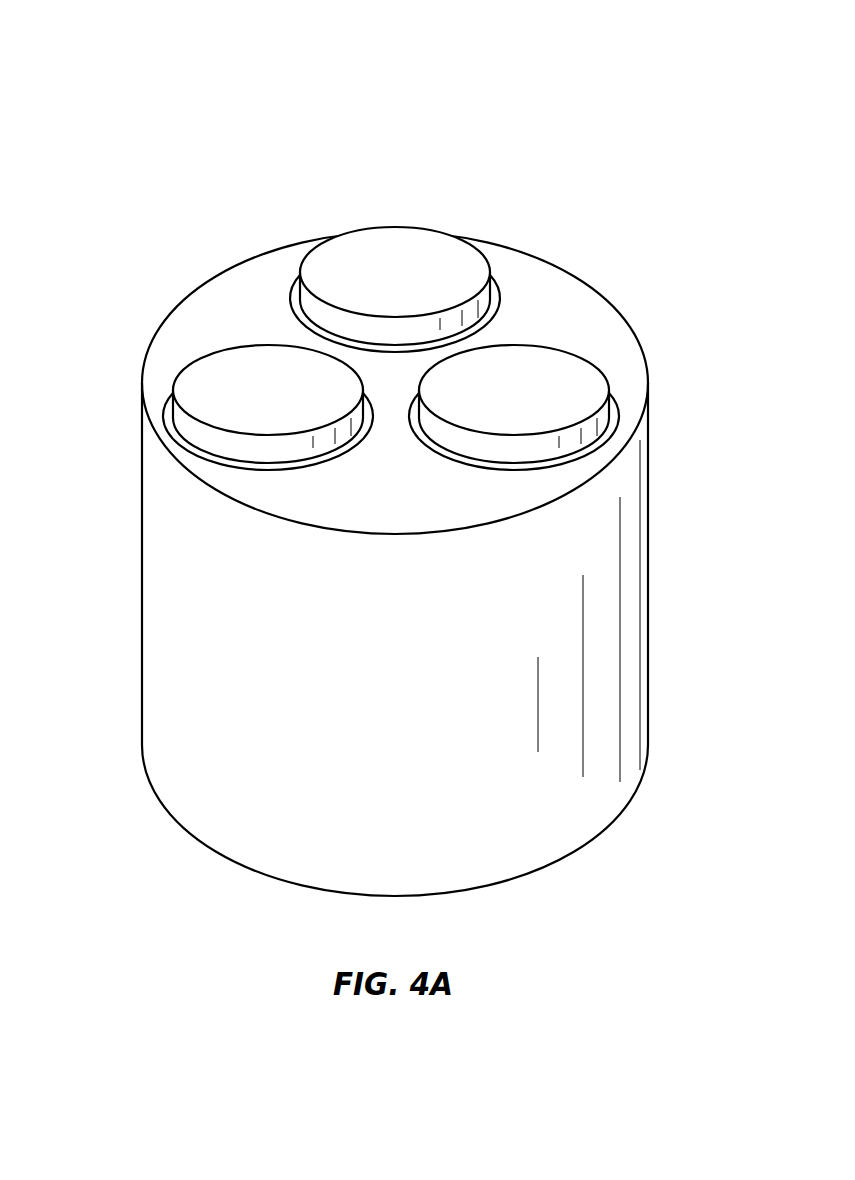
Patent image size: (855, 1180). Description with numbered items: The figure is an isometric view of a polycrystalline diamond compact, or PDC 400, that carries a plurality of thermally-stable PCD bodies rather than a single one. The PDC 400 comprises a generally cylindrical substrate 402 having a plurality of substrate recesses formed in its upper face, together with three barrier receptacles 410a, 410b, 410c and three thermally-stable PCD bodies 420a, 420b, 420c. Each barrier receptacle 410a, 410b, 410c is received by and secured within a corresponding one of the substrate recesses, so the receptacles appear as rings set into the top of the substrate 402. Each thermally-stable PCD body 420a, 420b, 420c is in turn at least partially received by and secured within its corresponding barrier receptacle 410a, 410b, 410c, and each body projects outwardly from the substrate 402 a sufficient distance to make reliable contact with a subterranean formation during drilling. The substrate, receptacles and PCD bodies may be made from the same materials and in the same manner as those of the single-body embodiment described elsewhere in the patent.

The PDC 400 is at (667, 106).
The substrate 402 is at (647, 607).
The barrier receptacle 410a is at (290, 297).
The barrier receptacle 410b is at (218, 458).
The barrier receptacle 410c is at (528, 465).
The thermally-stable PCD body 420a is at (388, 255).
The thermally-stable PCD body 420b is at (247, 377).
The thermally-stable PCD body 420c is at (568, 386).